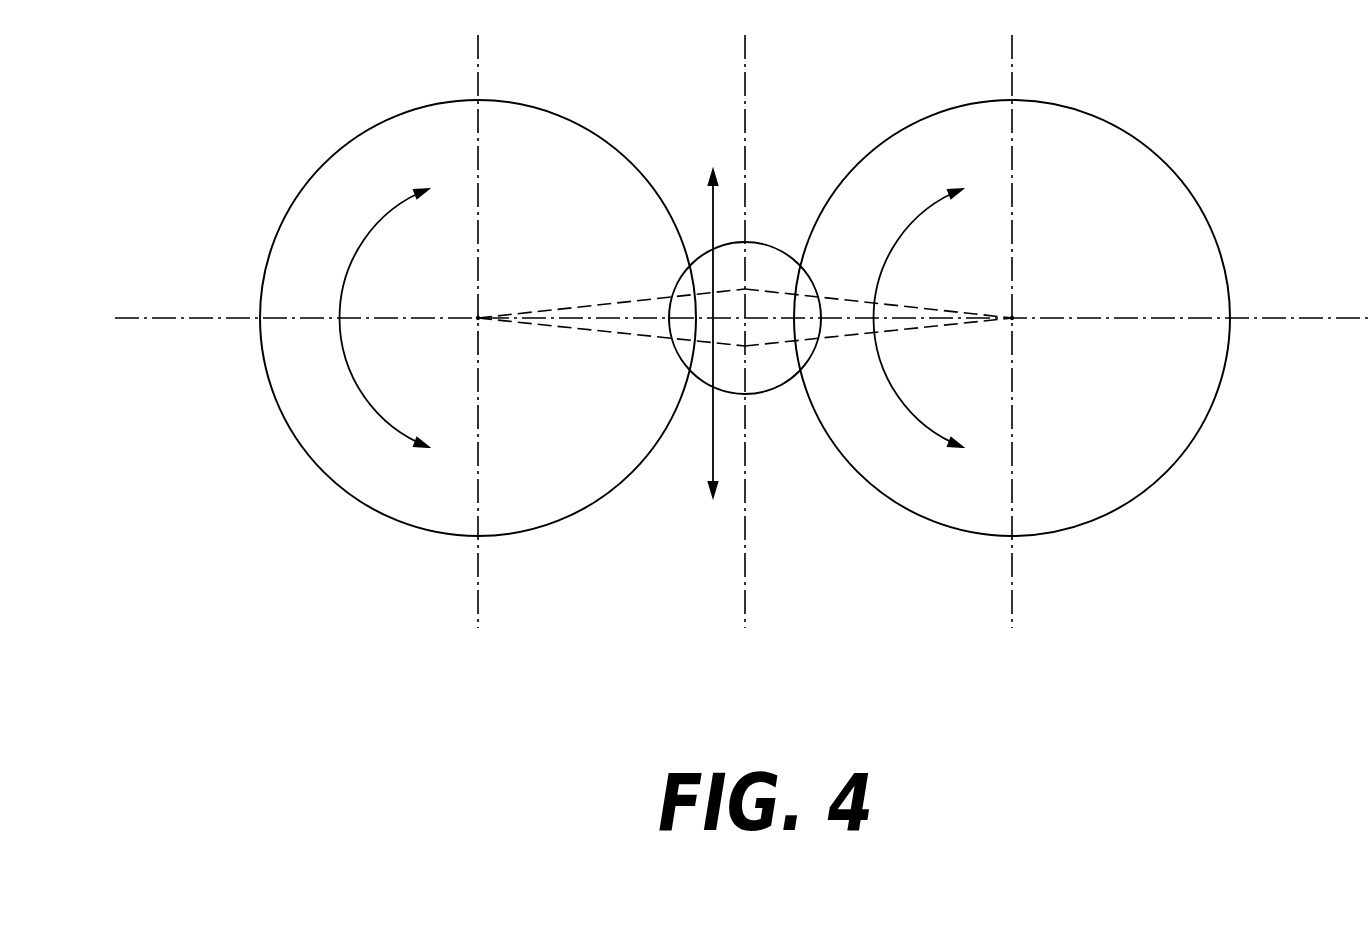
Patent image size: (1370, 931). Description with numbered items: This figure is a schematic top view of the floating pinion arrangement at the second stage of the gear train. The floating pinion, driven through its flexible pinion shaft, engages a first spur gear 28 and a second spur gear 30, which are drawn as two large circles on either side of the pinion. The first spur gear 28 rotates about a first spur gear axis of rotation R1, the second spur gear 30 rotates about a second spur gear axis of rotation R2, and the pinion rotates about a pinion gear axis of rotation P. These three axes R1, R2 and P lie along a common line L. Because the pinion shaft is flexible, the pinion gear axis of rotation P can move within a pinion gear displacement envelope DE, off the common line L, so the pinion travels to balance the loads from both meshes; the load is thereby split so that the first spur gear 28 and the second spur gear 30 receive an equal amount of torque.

The first spur gear 28 is at (380, 120).
The second spur gear 30 is at (1168, 168).
The first spur gear axis of rotation R1 is at (478, 318).
The second spur gear axis of rotation R2 is at (1012, 318).
The pinion gear axis of rotation P is at (747, 315).
The pinion gear displacement envelope DE is at (832, 340).
The common line L is at (1268, 316).